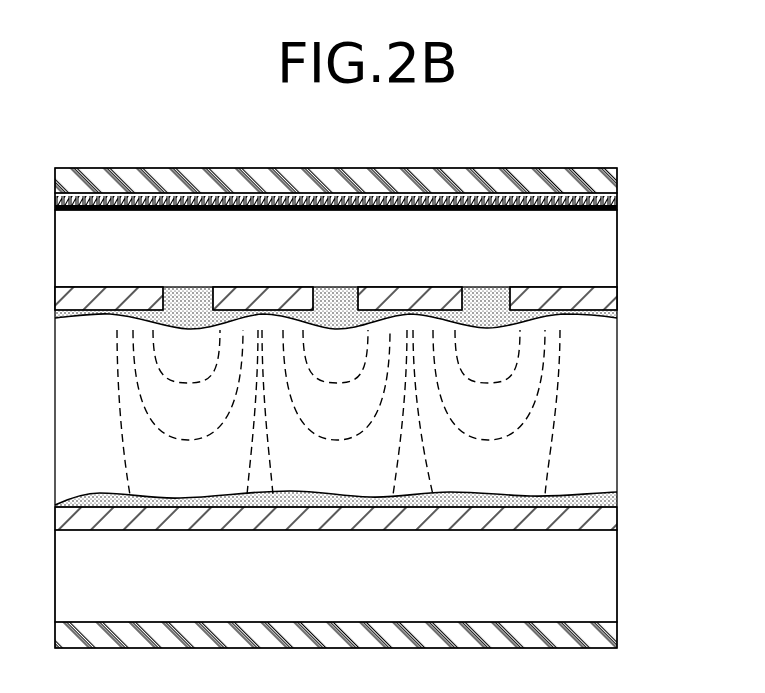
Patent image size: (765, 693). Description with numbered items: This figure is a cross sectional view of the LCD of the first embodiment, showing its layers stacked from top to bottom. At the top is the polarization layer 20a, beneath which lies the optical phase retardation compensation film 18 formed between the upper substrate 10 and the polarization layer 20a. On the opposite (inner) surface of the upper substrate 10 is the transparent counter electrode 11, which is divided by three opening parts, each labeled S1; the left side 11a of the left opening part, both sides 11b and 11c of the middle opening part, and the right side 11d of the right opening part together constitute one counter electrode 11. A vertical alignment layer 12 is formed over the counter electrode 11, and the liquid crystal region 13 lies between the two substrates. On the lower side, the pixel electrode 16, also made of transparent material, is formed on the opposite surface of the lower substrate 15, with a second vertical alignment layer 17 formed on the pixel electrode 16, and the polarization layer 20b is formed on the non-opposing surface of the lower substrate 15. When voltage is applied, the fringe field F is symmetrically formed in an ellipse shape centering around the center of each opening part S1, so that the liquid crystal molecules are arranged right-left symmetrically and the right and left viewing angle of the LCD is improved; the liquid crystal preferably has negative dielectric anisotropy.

The polarization layer 20a is at (617, 178).
The optical phase retardation compensation film 18 is at (617, 204).
The upper substrate 10 is at (617, 240).
The counter electrode 11 is at (383, 260).
The left side of the left opening part 11a is at (88, 302).
The side of the middle opening part 11b is at (262, 298).
The side of the middle opening part 11c is at (417, 298).
The right side of the right opening part 11d is at (583, 312).
The vertical alignment layer 12 is at (617, 318).
The opening part S1 is at (188, 330).
The discharge space 13 is at (394, 412).
The electric field lines F is at (111, 412).
The vertical alignment layer 17 is at (617, 500).
The pixel electrode 16 is at (617, 522).
The lower substrate 15 is at (617, 583).
The polarization layer 20b is at (617, 635).